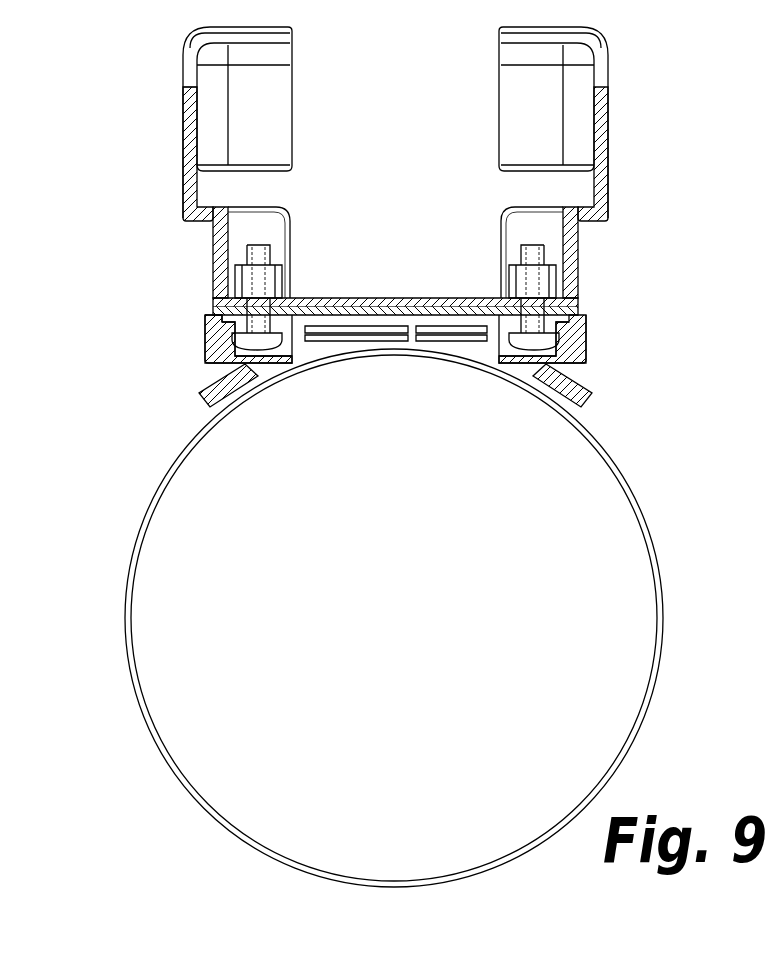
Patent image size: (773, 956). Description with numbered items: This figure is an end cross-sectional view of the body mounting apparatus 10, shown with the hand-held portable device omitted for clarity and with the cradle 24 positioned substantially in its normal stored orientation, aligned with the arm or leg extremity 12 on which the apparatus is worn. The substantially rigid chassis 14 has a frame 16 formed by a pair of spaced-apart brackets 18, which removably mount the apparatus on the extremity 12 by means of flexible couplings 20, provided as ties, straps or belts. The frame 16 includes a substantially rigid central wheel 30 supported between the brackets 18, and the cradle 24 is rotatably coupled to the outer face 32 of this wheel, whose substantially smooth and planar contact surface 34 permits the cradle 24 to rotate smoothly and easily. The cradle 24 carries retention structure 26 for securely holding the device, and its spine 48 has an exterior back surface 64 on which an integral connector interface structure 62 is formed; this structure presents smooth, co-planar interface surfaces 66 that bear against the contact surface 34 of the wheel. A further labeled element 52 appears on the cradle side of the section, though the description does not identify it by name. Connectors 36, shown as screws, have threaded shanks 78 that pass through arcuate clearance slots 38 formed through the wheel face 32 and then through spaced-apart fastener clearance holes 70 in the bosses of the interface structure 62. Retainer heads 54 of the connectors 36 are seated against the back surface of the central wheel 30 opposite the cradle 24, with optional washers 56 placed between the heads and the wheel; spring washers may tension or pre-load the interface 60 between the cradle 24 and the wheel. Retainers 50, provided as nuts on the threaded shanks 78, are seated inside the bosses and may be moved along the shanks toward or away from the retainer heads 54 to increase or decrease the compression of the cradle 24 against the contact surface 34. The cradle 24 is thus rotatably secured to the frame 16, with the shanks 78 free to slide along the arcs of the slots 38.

The body mounting apparatus 10 is at (106, 150).
The arm or leg extremity 12 is at (394, 628).
The chassis 14 is at (582, 318).
The frame 16 is at (582, 342).
The brackets 18 is at (588, 388).
The flexible couplings 20 is at (232, 832).
The cradle 24 is at (578, 272).
The retention structure 26 is at (605, 109).
The central wheel 30 is at (422, 338).
The face 32 is at (432, 322).
The contact surface 34 is at (468, 328).
The connectors 36 is at (222, 346).
The slots 38 is at (218, 328).
The spine 48 is at (400, 298).
The retainers 50 is at (278, 275).
The boss 52 is at (270, 225).
The retainer heads 54 is at (263, 352).
The washers 56 is at (273, 352).
The interface 60 is at (203, 312).
The connector interface structure 62 is at (212, 262).
The exterior back surface 64 is at (320, 340).
The interface surfaces 66 is at (213, 318).
The fastener clearance holes 70 is at (212, 290).
The threaded shanks 78 is at (262, 320).